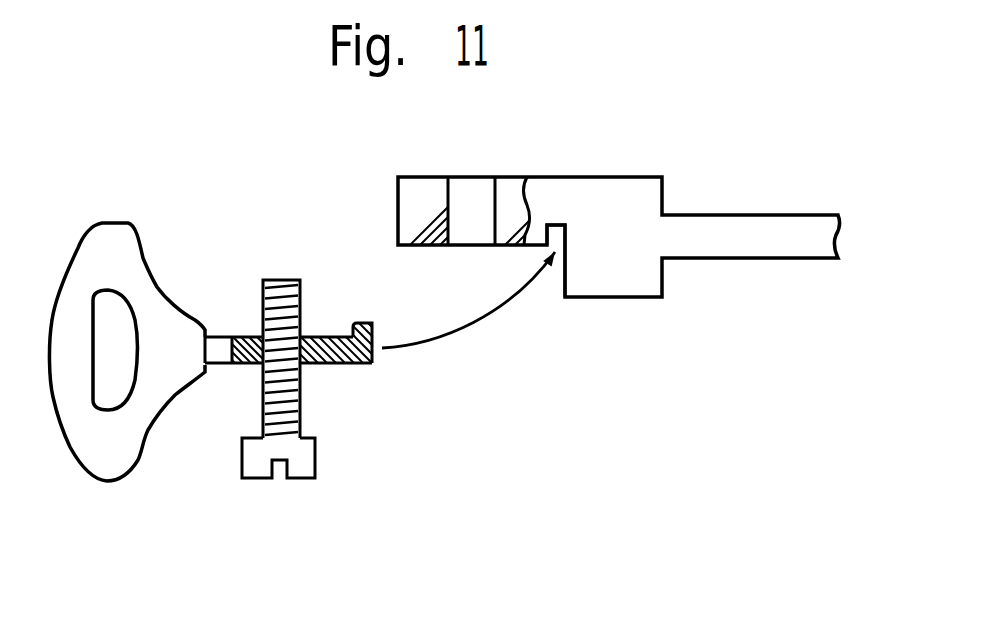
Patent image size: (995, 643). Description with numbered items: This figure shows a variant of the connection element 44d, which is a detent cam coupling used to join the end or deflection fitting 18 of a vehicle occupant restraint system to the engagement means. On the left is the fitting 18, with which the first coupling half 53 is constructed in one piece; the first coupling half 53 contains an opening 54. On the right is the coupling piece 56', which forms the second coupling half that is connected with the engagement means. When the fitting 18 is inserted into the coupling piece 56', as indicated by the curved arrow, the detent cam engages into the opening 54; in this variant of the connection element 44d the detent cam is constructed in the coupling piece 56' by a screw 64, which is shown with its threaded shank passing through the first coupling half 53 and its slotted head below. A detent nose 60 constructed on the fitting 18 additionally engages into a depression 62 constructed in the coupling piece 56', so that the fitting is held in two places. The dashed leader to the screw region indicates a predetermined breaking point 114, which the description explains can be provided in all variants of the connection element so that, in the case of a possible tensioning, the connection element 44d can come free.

The fitting 18 is at (96, 247).
The predetermined breaking point 114 is at (263, 312).
The detent nose 60 is at (370, 325).
The first coupling half 53 is at (222, 357).
The opening 54 is at (315, 365).
The screw 64 is at (304, 463).
The depression 62 is at (563, 224).
The coupling piece 56' is at (619, 203).
The connection element 44d is at (437, 422).